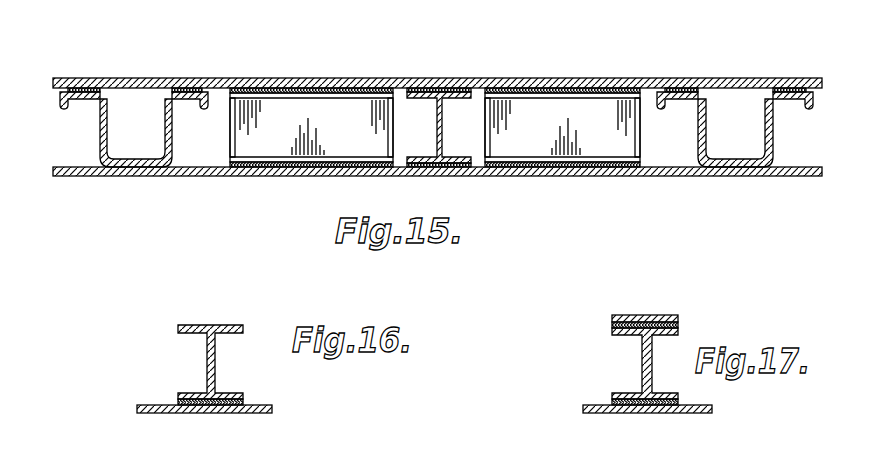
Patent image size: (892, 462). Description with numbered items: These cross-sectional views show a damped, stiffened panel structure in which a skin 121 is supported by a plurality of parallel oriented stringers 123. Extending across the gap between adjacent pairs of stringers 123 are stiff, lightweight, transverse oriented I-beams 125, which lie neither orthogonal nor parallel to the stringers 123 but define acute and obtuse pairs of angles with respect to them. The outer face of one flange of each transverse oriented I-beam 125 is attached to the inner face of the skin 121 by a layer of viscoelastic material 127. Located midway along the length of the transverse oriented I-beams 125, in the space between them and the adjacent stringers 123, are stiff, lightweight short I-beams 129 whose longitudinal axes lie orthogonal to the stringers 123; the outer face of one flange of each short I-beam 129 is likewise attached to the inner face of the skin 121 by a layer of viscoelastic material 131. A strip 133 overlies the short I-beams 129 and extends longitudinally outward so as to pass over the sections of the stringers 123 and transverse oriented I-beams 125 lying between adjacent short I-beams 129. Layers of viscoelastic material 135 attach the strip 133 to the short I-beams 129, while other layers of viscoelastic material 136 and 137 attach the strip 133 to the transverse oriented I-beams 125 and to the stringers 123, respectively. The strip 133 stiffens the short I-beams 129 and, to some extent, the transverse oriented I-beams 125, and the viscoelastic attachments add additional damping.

In FIG. 15, the skin 121 is at (691, 178).
In FIG. 16, the skin 121 is at (213, 406).
In FIG. 17, the skin 121 is at (648, 413).
In FIG. 15, the stringer 123 is at (100, 135).
In FIG. 15, the transverse oriented I-beam 125 is at (450, 123).
In FIG. 16, the transverse oriented I-beam 125 is at (207, 357).
In FIG. 15, the layer of viscoelastic material 127 is at (440, 168).
In FIG. 16, the layer of viscoelastic material 127 is at (240, 404).
In FIG. 15, the short I-beam 129 is at (263, 142).
In FIG. 17, the short I-beam 129 is at (641, 353).
In FIG. 15, the layer of viscoelastic material 131 is at (292, 168).
In FIG. 17, the layer of viscoelastic material 131 is at (610, 404).
In FIG. 15, the strip 133 is at (305, 80).
In FIG. 17, the strip 133 is at (628, 316).
In FIG. 15, the layer of viscoelastic material 135 is at (360, 82).
In FIG. 17, the layer of viscoelastic material 135 is at (682, 325).
In FIG. 15, the layer of viscoelastic material 136 is at (440, 88).
In FIG. 15, the layer of viscoelastic material 137 is at (90, 78).